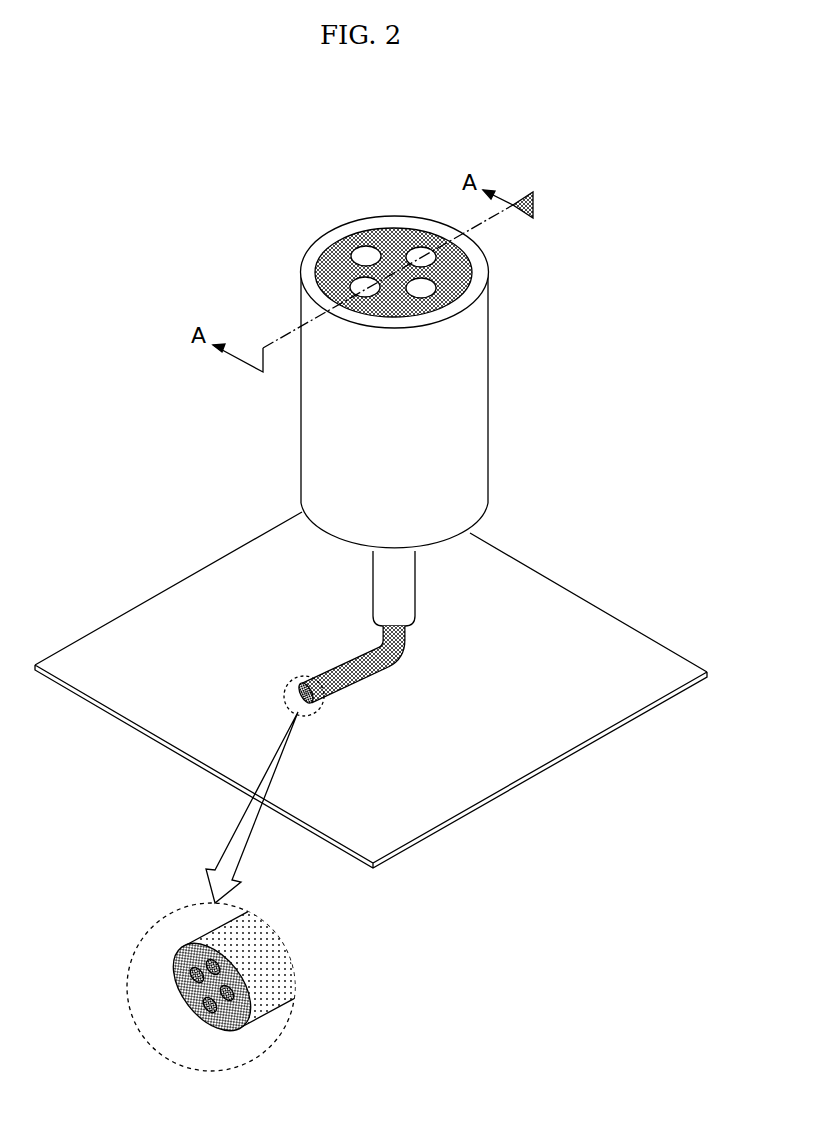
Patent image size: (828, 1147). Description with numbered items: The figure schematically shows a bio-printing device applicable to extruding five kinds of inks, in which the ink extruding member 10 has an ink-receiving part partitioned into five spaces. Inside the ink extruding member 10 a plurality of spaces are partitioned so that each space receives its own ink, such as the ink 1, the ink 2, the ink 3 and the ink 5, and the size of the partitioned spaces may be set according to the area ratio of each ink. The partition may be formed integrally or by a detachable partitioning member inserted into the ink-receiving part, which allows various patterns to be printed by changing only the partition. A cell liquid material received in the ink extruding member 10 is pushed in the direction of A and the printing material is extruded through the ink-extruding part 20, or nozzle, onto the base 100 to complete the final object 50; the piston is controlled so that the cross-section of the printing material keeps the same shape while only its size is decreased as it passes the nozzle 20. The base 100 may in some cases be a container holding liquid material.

The ink 1 is at (359, 242).
The ink 2 is at (416, 245).
The ink 3 is at (318, 273).
The ink 5 is at (318, 248).
The ink extruding member 10 is at (478, 407).
The ink-extruding part 20 is at (400, 583).
The final object 50 is at (297, 965).
The base 100 is at (540, 738).